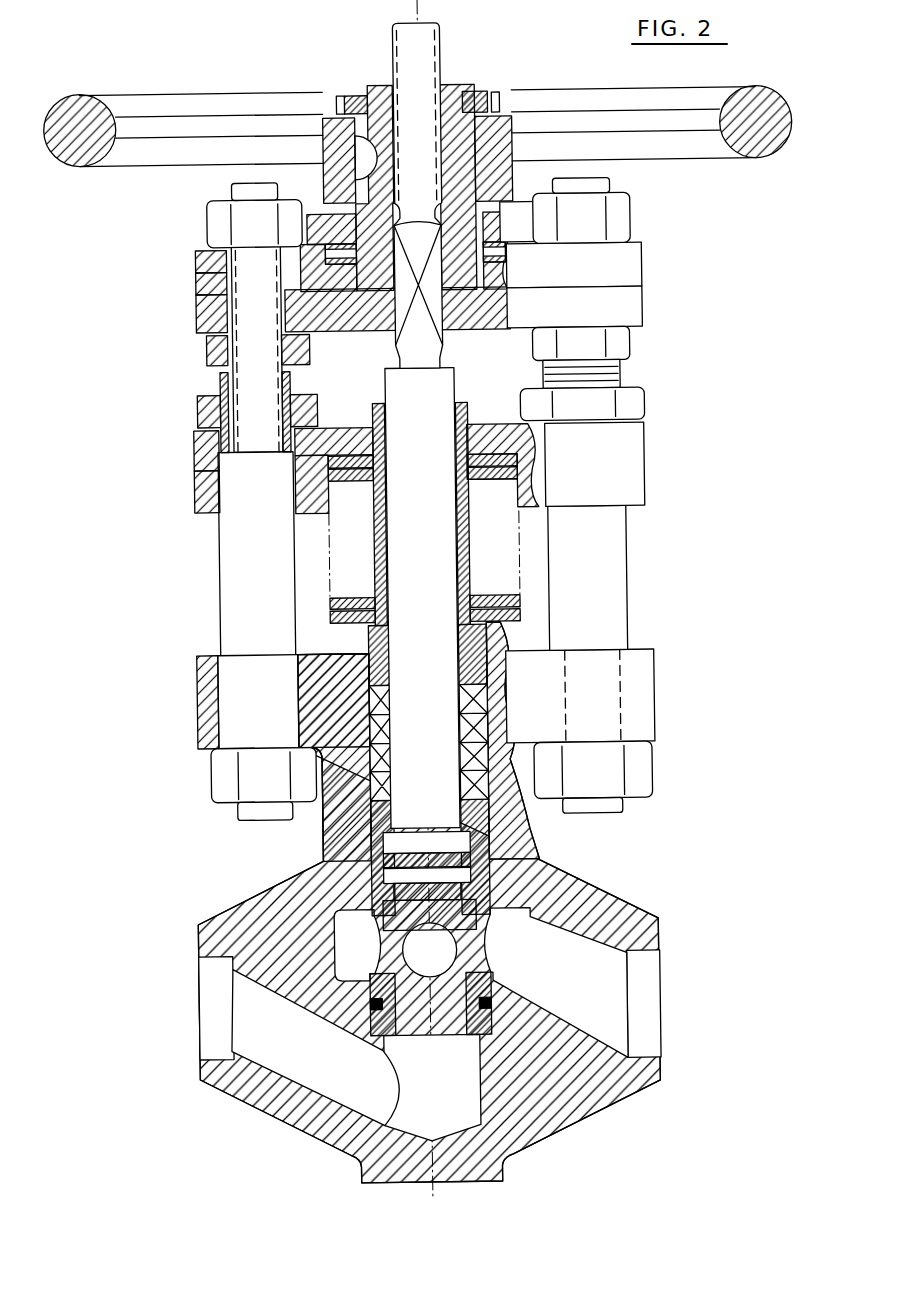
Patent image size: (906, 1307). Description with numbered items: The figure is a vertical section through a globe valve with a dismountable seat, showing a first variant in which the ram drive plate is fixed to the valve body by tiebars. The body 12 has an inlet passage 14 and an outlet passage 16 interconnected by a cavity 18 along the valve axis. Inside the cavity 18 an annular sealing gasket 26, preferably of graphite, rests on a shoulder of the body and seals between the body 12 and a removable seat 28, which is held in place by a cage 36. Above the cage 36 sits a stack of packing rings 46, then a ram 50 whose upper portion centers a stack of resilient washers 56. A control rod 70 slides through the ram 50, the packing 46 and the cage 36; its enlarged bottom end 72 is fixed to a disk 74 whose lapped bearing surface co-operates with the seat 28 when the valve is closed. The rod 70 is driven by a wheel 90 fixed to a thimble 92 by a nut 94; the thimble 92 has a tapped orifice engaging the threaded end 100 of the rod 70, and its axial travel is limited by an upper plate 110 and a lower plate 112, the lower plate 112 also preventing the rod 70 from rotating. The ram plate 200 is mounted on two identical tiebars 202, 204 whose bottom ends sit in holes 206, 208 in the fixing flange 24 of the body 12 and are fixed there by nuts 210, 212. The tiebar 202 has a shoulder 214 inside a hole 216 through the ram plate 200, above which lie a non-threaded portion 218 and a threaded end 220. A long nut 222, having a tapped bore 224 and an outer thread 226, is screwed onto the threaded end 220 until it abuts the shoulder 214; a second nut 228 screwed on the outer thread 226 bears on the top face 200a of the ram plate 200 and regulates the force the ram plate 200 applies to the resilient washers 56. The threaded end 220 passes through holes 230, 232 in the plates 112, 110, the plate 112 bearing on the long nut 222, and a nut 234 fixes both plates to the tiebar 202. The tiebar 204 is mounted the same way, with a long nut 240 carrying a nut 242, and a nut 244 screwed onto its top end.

The body 12 is at (556, 1105).
The inlet passage 14 is at (237, 1026).
The outlet passage 16 is at (610, 1010).
The cavity 18 is at (340, 946).
The fixing flange 24 is at (645, 720).
The annular sealing gasket 26 is at (360, 1001).
The removable seat 28 is at (391, 1010).
The cage 36 is at (497, 875).
The packing rings 46 is at (478, 725).
The ram 50 is at (490, 638).
The resilient washers 56 is at (500, 544).
The control rod 70 is at (440, 577).
The bottom end of the rod 72 is at (392, 849).
The disk 74 is at (392, 905).
The wheel 90 is at (766, 163).
The thimble 92 is at (485, 140).
The nut 94 is at (500, 92).
The threaded end of the rod 100 is at (435, 60).
The upper plate 110 is at (650, 281).
The lower plate 112 is at (650, 314).
The ram plate 200 is at (630, 460).
The top face of the ram plate 200a is at (489, 425).
The tiebar 202 is at (215, 555).
The tiebar 204 is at (630, 610).
The hole 206 is at (213, 678).
The hole 208 is at (620, 695).
The nut 210 is at (215, 775).
The nut 212 is at (640, 780).
The shoulder 214 is at (225, 440).
The hole 216 is at (215, 486).
The non-threaded portion 218 is at (310, 408).
The threaded end 220 is at (244, 262).
The long nut 222 is at (207, 349).
The tapped bore 224 is at (300, 350).
The outer thread 226 is at (225, 382).
The second nut 228 is at (210, 410).
The hole 230 is at (229, 302).
The hole 232 is at (205, 254).
The nut 234 is at (215, 212).
The long nut 240 is at (630, 348).
The nut 242 is at (635, 404).
The nut 244 is at (645, 218).